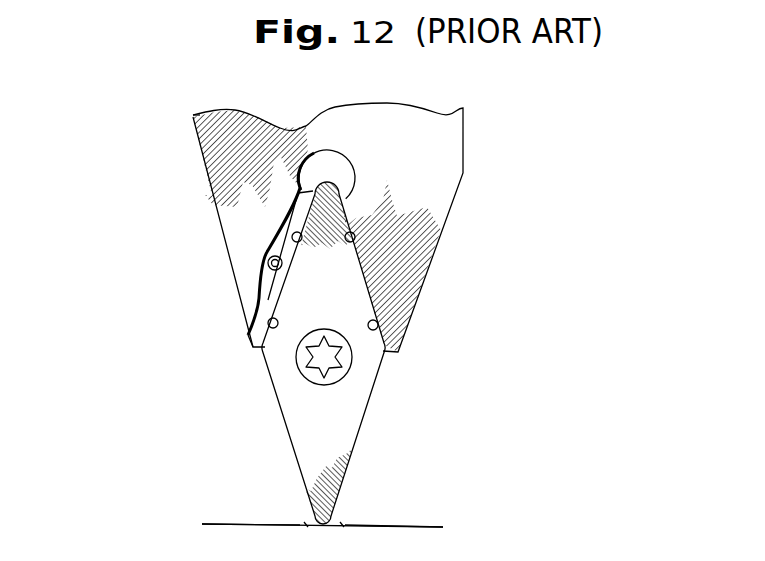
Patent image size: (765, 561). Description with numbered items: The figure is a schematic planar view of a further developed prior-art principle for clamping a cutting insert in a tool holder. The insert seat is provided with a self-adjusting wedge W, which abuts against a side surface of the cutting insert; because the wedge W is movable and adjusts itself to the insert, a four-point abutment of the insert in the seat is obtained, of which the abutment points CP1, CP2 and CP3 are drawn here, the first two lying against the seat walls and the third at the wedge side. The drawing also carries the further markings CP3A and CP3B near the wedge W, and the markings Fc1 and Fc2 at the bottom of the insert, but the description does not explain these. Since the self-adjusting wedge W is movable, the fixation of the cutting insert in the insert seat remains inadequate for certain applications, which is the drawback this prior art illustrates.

The abutment point CP1 is at (379, 323).
The abutment point CP2 is at (356, 234).
The abutment point CP3 is at (268, 262).
The clamp contact point A CP3A is at (267, 324).
The clamp contact point B CP3B is at (292, 234).
The self-adjusting wedge W is at (268, 284).
The cutting force component 1 Fc1 is at (394, 510).
The cutting force component 2 Fc2 is at (251, 509).